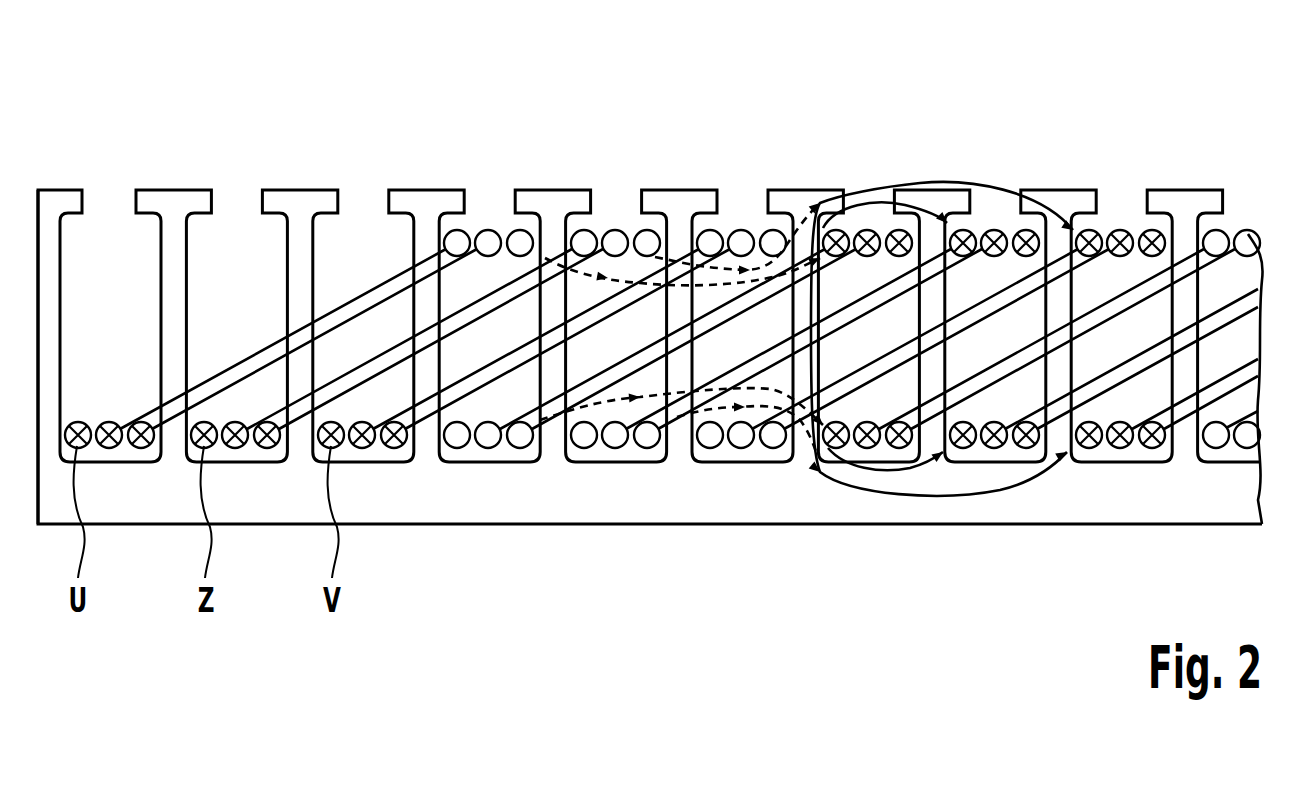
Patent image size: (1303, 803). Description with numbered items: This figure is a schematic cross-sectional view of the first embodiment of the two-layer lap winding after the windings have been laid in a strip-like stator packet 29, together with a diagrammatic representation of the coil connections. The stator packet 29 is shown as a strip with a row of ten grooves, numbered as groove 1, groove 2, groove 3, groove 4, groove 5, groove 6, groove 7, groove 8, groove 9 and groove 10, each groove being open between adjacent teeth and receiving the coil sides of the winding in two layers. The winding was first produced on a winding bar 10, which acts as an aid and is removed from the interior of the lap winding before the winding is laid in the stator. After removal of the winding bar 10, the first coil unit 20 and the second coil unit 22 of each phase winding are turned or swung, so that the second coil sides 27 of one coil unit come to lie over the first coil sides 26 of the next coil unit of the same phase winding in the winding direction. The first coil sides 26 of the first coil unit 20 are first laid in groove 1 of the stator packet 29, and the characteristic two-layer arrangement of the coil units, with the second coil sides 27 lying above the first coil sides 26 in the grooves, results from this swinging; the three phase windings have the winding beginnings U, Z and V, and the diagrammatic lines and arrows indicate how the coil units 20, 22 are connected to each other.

The groove 1 is at (109, 254).
The slot 2 is at (235, 254).
The slot 3 is at (362, 254).
The slot 4 is at (506, 340).
The slot 5 is at (615, 254).
The slot 6 is at (741, 254).
The slot 7 is at (867, 254).
The slot 8 is at (994, 254).
The slot 9 is at (1120, 254).
The winding bar 10 is at (1243, 254).
The first coil unit 20 is at (518, 215).
The second coil unit 22 is at (533, 495).
The first coil side 26 is at (489, 577).
The second coil side 27 is at (518, 230).
The strip-like stator packet 29 is at (637, 502).